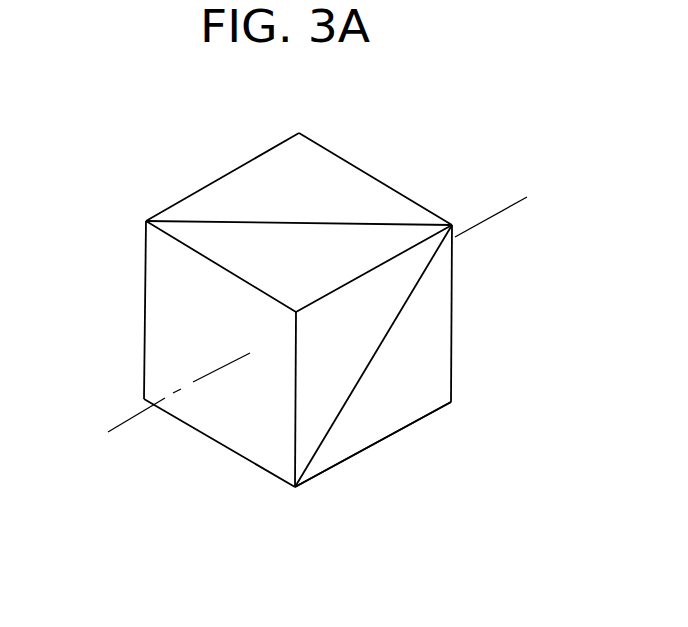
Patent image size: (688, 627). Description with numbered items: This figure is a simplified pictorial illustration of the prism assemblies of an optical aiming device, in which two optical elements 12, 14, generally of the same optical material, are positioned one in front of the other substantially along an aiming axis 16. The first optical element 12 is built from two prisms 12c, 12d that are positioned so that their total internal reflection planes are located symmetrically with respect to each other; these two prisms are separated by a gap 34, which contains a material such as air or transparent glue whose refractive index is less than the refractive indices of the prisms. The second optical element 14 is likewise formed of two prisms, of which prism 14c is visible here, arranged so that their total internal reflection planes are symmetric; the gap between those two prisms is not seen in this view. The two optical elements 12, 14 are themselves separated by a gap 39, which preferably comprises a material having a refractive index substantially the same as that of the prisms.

The optical element 12 is at (150, 294).
The prism 12c is at (178, 221).
The prism 12d is at (252, 178).
The gap 34 is at (202, 242).
The optical element 14 is at (441, 363).
The prism 14c is at (407, 405).
The gap 39 is at (323, 442).
The aiming axis 16 is at (507, 205).